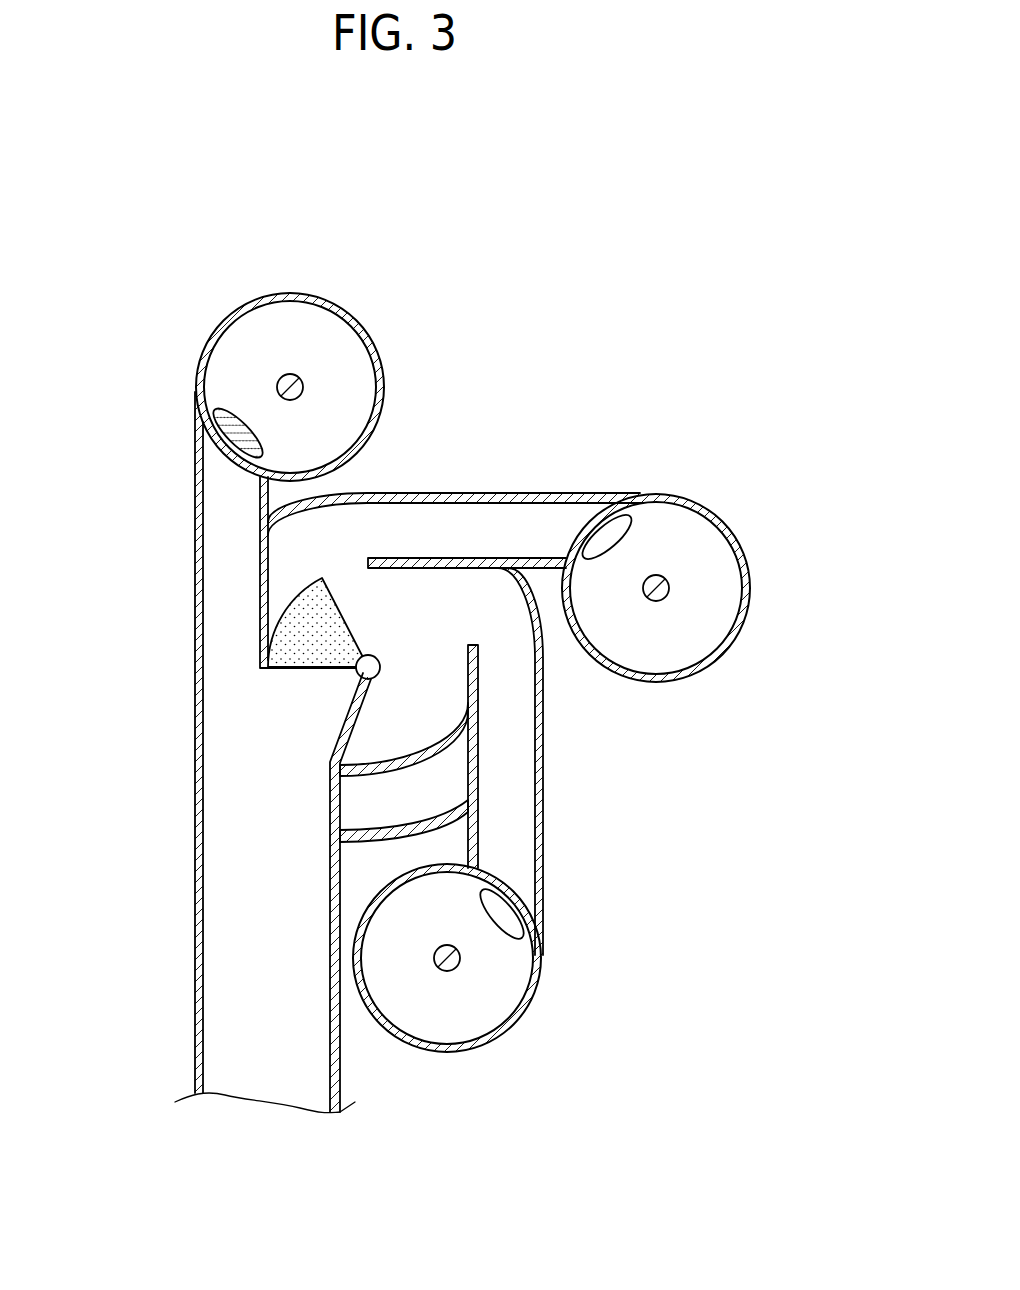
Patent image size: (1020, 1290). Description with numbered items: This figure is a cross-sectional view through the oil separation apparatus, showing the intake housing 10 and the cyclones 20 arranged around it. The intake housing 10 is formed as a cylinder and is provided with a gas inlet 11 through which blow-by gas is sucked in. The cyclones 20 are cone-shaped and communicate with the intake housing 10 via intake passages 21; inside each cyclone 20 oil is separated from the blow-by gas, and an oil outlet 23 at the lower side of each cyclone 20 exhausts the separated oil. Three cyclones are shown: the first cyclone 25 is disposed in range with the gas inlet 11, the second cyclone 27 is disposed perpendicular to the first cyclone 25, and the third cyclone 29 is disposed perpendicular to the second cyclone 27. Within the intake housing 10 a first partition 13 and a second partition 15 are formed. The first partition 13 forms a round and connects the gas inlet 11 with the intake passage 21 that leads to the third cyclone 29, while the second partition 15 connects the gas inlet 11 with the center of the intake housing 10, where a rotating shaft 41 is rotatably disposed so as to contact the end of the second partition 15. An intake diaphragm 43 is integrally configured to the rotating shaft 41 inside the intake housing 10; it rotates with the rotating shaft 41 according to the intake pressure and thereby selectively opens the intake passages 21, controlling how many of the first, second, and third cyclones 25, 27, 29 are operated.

The intake housing 10 is at (356, 847).
The gas inlet 11 is at (204, 1051).
The first partition 13 is at (410, 770).
The second partition 15 is at (347, 723).
The cyclone 20 is at (478, 655).
The intake passage 21 is at (195, 533).
The oil outlet 23 is at (272, 387).
The first cyclone 25 is at (363, 321).
The second cyclone 27 is at (752, 588).
The third cyclone 29 is at (536, 1000).
The rotating shaft 41 is at (356, 672).
The intake diaphragm 43 is at (330, 622).